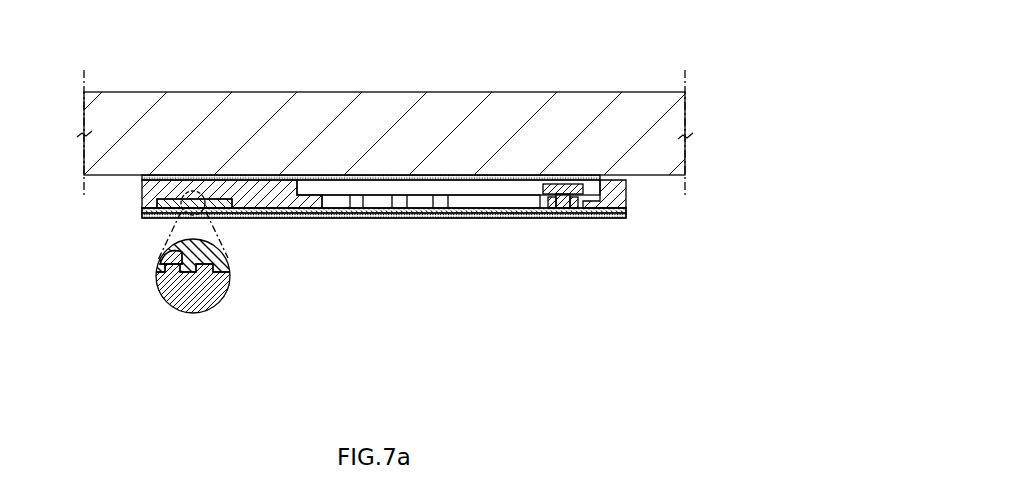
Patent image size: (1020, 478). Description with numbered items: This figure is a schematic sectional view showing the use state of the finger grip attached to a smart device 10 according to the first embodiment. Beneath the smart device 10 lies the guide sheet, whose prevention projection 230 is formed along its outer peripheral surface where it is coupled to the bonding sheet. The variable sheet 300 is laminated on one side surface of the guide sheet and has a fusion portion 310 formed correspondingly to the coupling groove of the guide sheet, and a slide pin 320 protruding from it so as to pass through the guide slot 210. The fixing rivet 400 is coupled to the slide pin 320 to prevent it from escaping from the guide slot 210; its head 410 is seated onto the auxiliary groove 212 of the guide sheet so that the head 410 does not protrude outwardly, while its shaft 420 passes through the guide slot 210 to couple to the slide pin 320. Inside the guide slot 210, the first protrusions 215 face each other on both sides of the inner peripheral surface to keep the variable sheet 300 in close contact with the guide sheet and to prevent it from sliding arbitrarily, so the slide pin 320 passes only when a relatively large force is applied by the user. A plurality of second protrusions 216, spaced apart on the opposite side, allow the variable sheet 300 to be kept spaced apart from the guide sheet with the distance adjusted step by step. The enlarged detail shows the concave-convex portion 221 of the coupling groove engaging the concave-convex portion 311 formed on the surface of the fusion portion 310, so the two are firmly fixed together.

The smart device 10 is at (136, 98).
The prevention projection 230 is at (142, 178).
The slide pin 320 is at (222, 185).
The auxiliary groove 212 is at (320, 190).
The guide slot 210 is at (488, 201).
The head 410 is at (566, 190).
The shaft 420 is at (565, 210).
The variable sheet 300 is at (284, 214).
The second protrusions 216 is at (362, 213).
The first protrusions 215 is at (542, 205).
The fixing rivet 400 is at (428, 214).
The fusion portion 310 is at (197, 315).
The concave-convex portion 311 is at (160, 293).
The concave-convex portion 221 is at (172, 248).